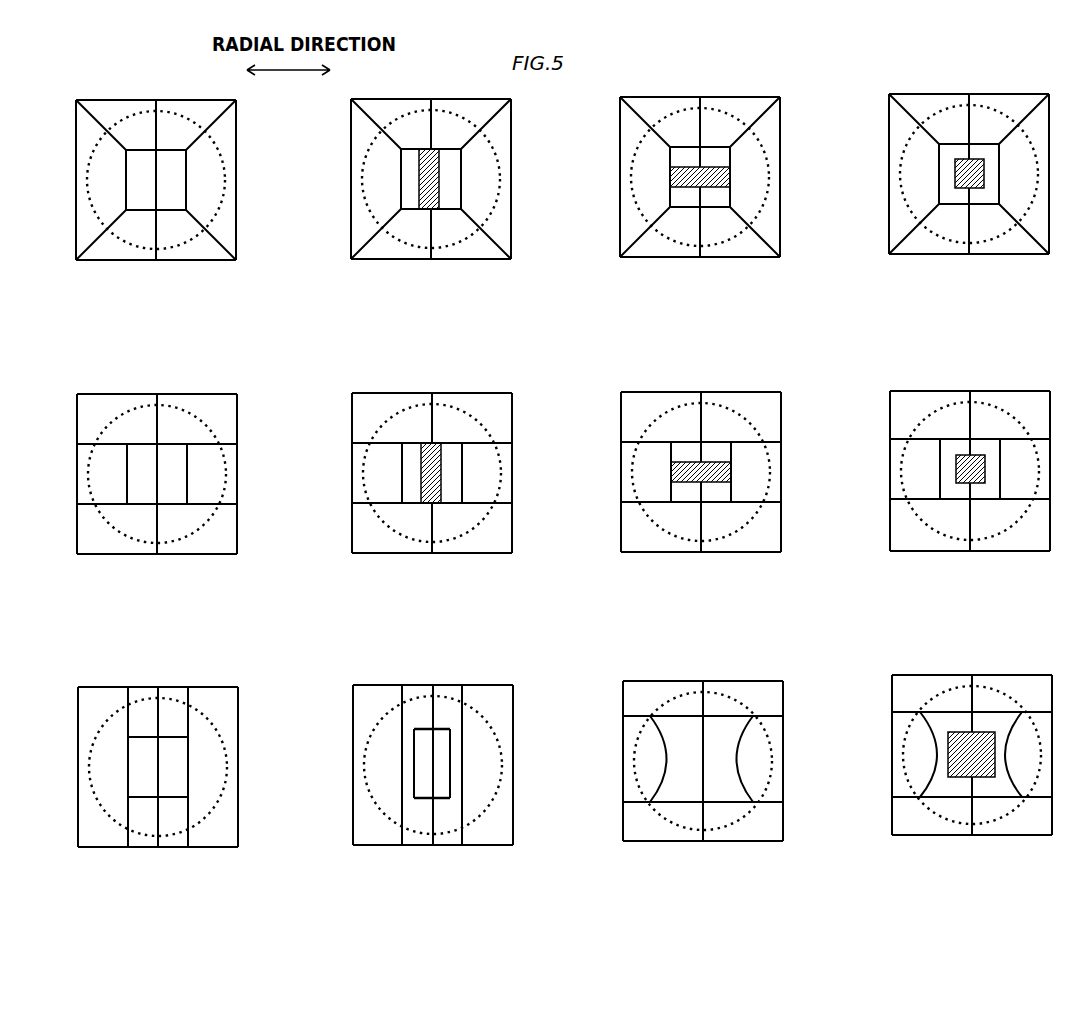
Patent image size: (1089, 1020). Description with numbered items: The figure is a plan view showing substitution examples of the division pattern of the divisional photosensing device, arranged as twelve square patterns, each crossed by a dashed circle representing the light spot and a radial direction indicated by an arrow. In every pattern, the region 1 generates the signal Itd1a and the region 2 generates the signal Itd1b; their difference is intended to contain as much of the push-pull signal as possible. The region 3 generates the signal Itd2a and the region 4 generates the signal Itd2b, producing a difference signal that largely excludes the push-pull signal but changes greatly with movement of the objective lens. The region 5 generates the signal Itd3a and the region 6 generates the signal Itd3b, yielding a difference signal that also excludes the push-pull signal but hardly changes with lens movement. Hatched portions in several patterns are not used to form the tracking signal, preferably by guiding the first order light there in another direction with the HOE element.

The region for generating the signal Itd1a 1 is at (474, 472).
The region for generating the signal Itd1b 2 is at (659, 470).
The region for generating the signal Itd2a 3 is at (524, 472).
The region for generating the signal Itd2b 4 is at (604, 472).
The region for generating the signal Itd3a 5 is at (59, 106).
The region for generating the signal Itd3b 6 is at (623, 470).